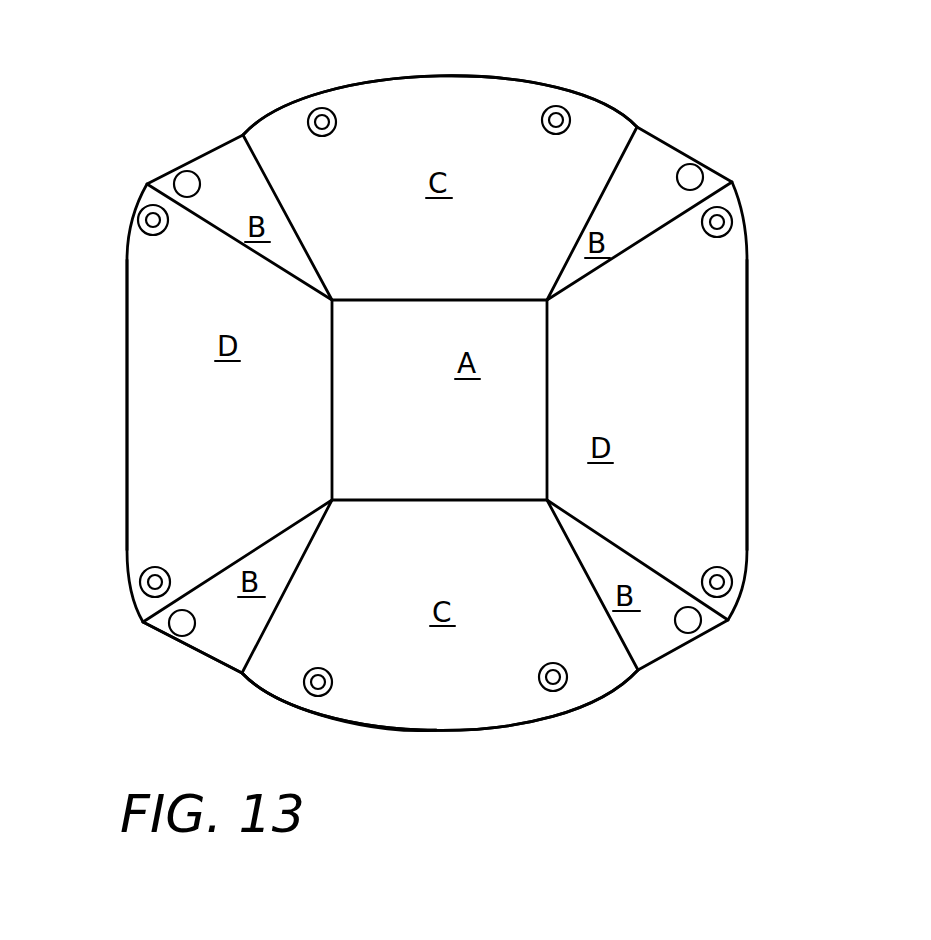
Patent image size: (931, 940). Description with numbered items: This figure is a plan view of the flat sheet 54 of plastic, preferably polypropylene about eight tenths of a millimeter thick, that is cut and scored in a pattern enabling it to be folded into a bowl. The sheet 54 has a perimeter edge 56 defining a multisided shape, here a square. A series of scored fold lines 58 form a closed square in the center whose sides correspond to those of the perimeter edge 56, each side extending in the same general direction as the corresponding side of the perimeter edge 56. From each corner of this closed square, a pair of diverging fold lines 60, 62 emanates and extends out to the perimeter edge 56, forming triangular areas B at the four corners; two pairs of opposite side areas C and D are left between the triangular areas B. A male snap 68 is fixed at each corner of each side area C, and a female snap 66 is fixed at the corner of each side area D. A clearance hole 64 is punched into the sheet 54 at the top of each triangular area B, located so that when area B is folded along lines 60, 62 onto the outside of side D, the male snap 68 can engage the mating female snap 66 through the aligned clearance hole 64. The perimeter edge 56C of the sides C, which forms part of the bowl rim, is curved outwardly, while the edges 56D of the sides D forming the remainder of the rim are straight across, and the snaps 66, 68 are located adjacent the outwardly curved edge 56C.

The flat sheet 54 is at (127, 457).
The perimeter edge 56 is at (280, 703).
The perimeter edge of sides C 56C is at (360, 82).
The edges of sides D 56D is at (127, 370).
The scored fold lines 58 is at (333, 327).
The diverging fold line 60 is at (207, 222).
The diverging fold line 62 is at (300, 237).
The clearance hole 64 is at (183, 170).
The female snap 66 is at (140, 211).
The male snap 68 is at (311, 112).